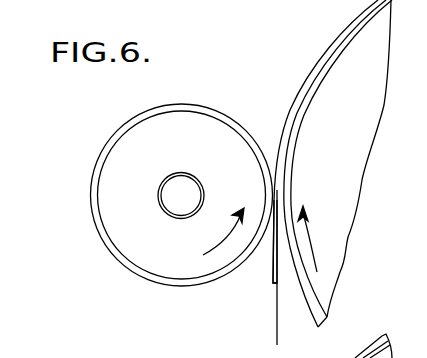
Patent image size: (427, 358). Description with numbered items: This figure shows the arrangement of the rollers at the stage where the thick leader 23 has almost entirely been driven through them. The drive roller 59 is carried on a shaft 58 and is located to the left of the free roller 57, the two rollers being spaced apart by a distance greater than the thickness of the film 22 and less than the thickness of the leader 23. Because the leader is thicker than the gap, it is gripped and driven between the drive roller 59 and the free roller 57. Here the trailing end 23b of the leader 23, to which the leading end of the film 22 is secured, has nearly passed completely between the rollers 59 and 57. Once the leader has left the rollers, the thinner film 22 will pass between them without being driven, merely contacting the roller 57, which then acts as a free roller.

The drive roller 59 is at (220, 135).
The shaft 58 is at (167, 193).
The free roller 57 is at (313, 95).
The leader 23 is at (345, 25).
The trailing end of the leader 23b is at (271, 258).
The film 22 is at (279, 292).